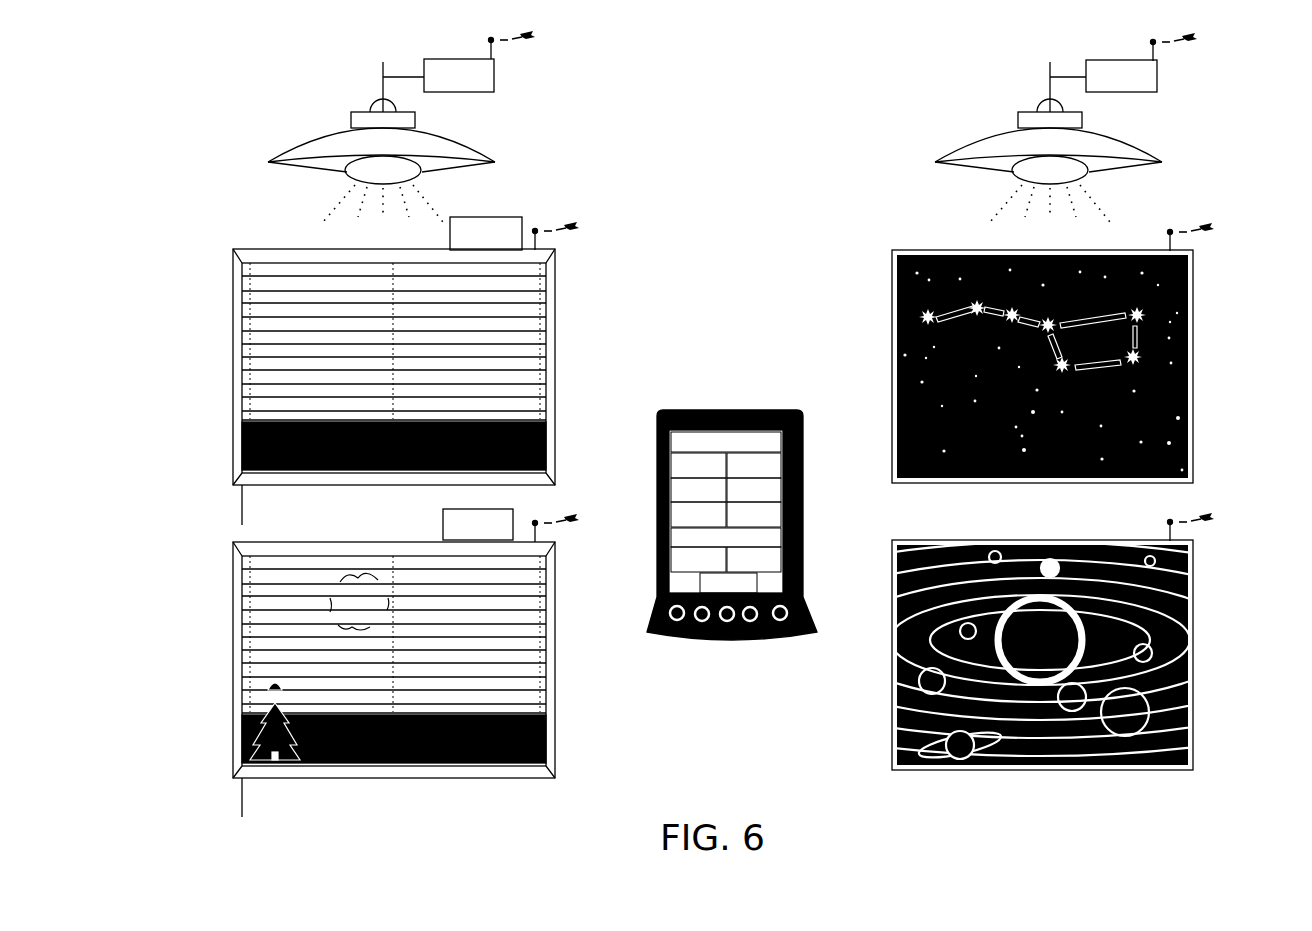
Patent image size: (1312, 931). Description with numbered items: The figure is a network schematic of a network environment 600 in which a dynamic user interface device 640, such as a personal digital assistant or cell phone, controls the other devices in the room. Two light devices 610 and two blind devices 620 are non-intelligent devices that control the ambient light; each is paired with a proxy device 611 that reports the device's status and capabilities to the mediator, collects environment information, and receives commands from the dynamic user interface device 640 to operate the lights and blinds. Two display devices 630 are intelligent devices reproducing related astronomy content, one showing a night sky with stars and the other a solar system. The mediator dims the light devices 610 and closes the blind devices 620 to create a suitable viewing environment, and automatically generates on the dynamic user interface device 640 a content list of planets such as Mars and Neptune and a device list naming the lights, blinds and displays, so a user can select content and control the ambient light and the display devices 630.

The network environment 600 is at (741, 128).
The light devices 610 is at (304, 134).
The proxy devices 611 is at (501, 93).
The blind devices 620 is at (564, 410).
The display devices 630 is at (1201, 420).
The dynamic user interface device 640 is at (739, 650).